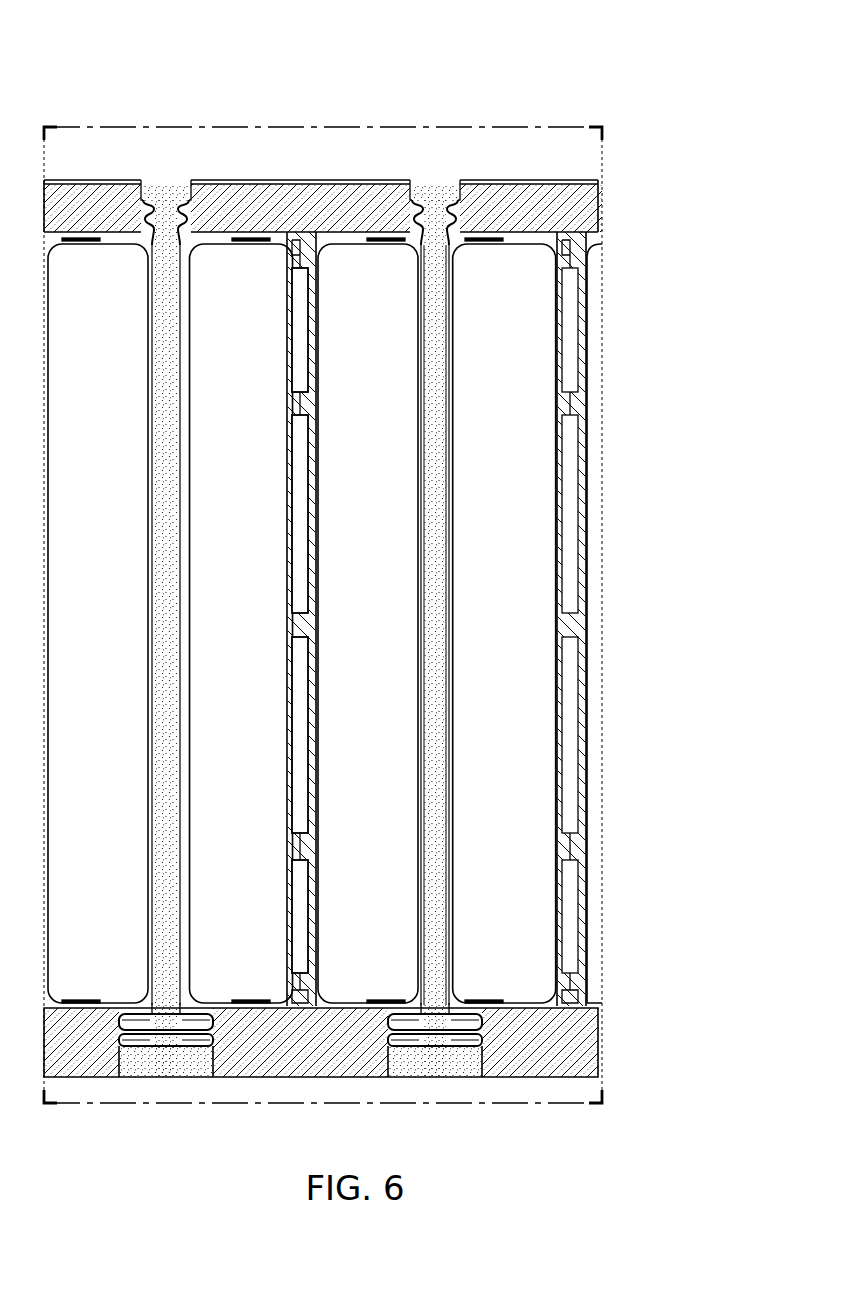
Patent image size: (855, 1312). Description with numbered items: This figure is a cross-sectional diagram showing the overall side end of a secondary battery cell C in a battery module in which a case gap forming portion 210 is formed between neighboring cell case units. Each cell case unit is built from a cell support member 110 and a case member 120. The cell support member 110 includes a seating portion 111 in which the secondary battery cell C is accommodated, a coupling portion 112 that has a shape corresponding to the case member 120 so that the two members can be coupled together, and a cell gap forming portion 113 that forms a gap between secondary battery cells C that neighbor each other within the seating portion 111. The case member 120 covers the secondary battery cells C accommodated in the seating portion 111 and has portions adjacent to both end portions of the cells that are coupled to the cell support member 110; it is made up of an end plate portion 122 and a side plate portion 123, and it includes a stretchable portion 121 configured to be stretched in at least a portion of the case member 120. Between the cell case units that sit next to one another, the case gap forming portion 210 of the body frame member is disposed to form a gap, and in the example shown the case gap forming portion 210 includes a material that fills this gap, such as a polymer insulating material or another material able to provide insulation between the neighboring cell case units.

The cell support member 110 is at (330, 52).
The seating portion 111 is at (290, 323).
The coupling portion 112 is at (188, 207).
The cell gap forming portion 113 is at (313, 297).
The case member 120 is at (510, 52).
The stretchable portion 121 is at (452, 200).
The end plate portion 122 is at (417, 280).
The side plate portion 123 is at (430, 245).
The case gap forming portion 210 is at (440, 325).
The secondary battery cell C is at (362, 446).